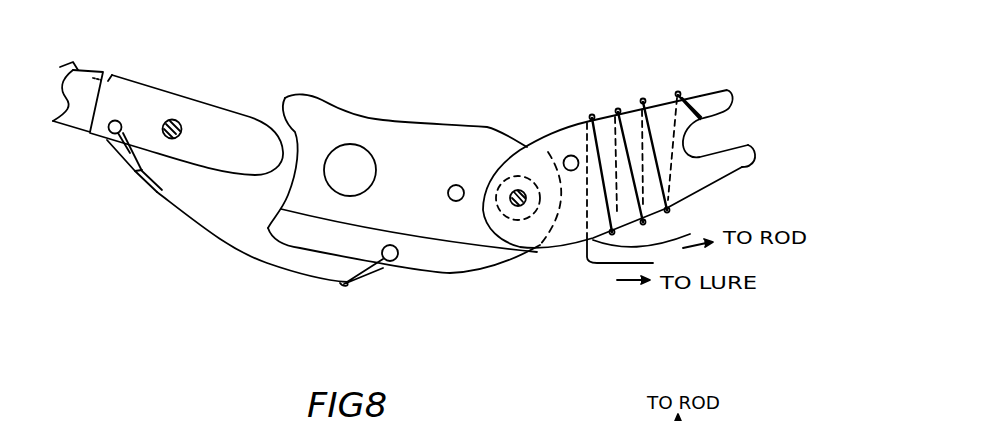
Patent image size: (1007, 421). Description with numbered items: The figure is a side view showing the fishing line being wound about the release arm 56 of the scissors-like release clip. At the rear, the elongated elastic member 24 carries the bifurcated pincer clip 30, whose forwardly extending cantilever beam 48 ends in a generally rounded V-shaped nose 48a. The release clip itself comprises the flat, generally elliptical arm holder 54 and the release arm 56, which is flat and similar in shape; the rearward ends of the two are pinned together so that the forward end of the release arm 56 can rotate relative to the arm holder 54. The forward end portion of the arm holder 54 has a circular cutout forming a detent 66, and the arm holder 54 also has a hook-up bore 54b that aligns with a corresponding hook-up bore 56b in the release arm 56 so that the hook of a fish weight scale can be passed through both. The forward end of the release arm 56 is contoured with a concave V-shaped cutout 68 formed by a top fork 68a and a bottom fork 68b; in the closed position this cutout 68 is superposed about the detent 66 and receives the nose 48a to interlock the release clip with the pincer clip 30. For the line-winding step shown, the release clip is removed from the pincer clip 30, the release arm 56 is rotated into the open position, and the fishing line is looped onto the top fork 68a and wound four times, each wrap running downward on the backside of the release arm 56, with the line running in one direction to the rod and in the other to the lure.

The elongated elastic member 24 is at (90, 60).
The bifurcated pincer clip 30 is at (163, 86).
The cantilever beam 48 is at (232, 131).
The V-shaped nose 48a is at (273, 147).
The detent 66 is at (348, 148).
The hook-up bore 54b is at (457, 185).
The arm holder 54 is at (487, 127).
The release arm 56 is at (556, 130).
The hook-up bore 56b is at (576, 155).
The V-shaped cutout 68 is at (720, 136).
The top fork 68a is at (717, 90).
The bottom fork 68b is at (744, 162).